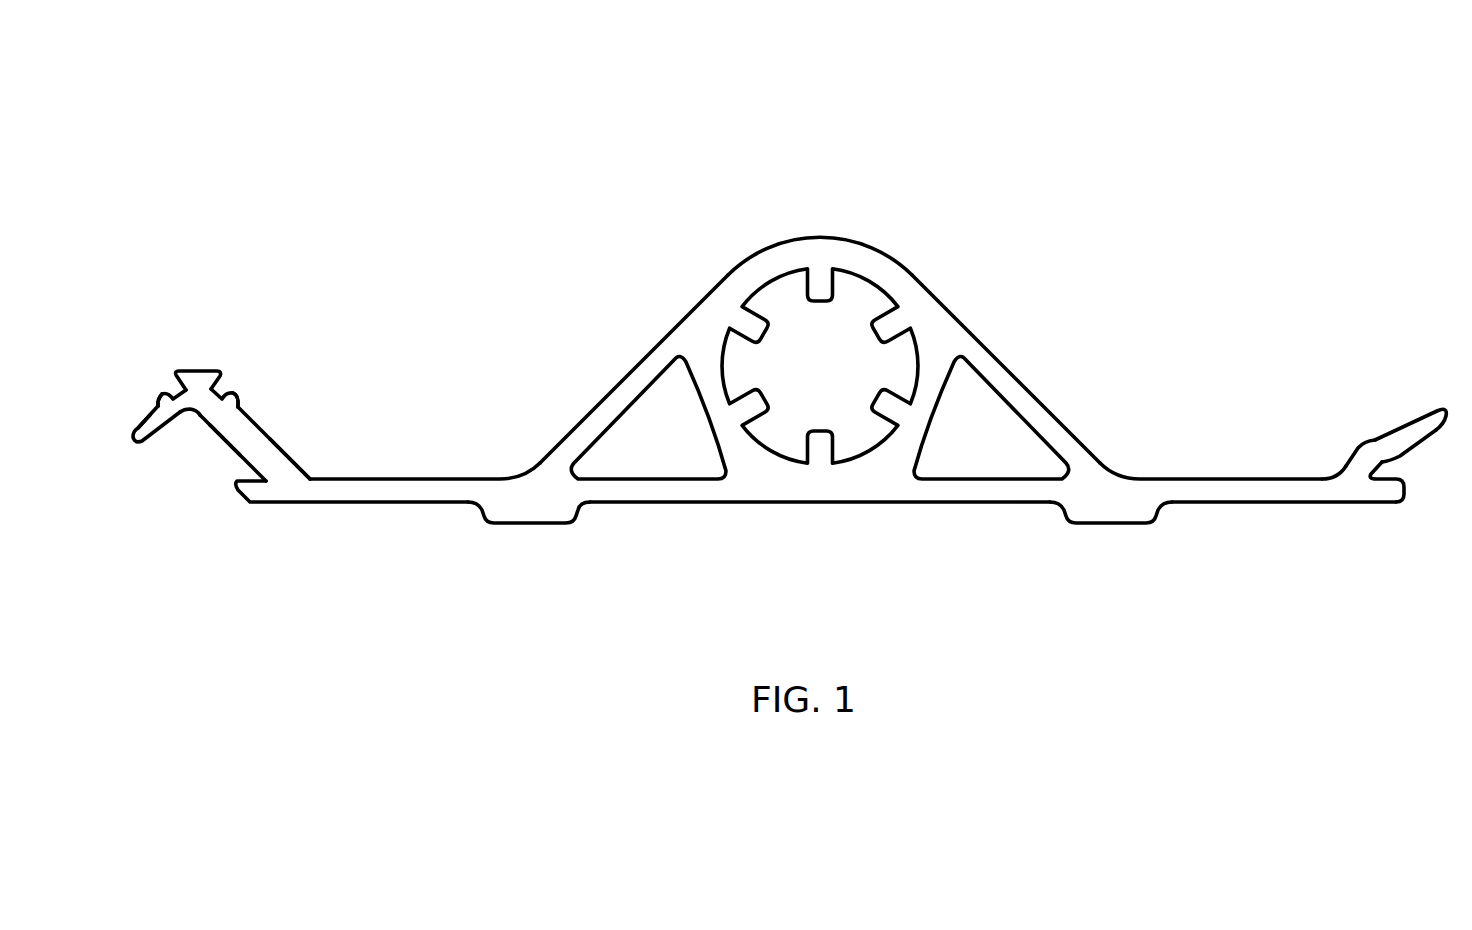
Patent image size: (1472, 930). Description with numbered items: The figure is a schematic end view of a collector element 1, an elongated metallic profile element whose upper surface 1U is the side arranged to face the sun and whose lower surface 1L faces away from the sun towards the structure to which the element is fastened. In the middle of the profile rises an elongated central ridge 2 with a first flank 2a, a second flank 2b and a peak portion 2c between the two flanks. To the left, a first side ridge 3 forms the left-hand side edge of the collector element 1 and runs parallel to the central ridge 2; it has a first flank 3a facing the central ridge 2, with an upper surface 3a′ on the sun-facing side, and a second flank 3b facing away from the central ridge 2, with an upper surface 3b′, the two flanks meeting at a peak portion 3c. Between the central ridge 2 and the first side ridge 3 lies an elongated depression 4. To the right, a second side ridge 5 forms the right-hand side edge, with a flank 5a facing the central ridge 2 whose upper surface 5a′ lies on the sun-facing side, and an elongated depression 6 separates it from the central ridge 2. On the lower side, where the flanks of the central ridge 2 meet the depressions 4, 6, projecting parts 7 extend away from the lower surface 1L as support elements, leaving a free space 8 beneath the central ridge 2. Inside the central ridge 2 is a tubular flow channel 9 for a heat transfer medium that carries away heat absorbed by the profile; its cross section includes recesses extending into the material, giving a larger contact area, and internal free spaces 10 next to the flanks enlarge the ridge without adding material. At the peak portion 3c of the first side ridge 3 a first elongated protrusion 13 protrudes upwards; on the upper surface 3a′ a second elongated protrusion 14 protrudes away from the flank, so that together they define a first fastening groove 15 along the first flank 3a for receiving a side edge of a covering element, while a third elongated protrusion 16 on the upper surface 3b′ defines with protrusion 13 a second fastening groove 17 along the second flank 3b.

The collector element 1 is at (1062, 124).
The upper surface 1U is at (760, 245).
The lower surface 1L is at (1014, 508).
The central ridge 2 is at (870, 267).
The first flank 2a is at (1015, 355).
The second flank 2b is at (637, 330).
The peak portion 2c is at (816, 208).
The first side ridge 3 is at (278, 348).
The first flank 3a is at (263, 453).
The upper surface 3a′ is at (292, 460).
The second flank 3b is at (140, 436).
The upper surface 3b′ is at (136, 424).
The peak portion 3c is at (203, 328).
The depression 4 is at (446, 458).
The second side ridge 5 is at (1381, 378).
The flank 5a is at (1433, 417).
The upper surface 5a′ is at (1362, 440).
The depression 6 is at (1232, 430).
The projecting parts 7 is at (541, 509).
The free space 8 is at (833, 524).
The flow channel 9 is at (829, 365).
The recesses 10 is at (677, 447).
The first elongated protrusion 13 is at (203, 375).
The second elongated protrusion 14 is at (238, 399).
The first fastening groove 15 is at (222, 392).
The third elongated protrusion 16 is at (154, 398).
The second fastening groove 17 is at (166, 391).